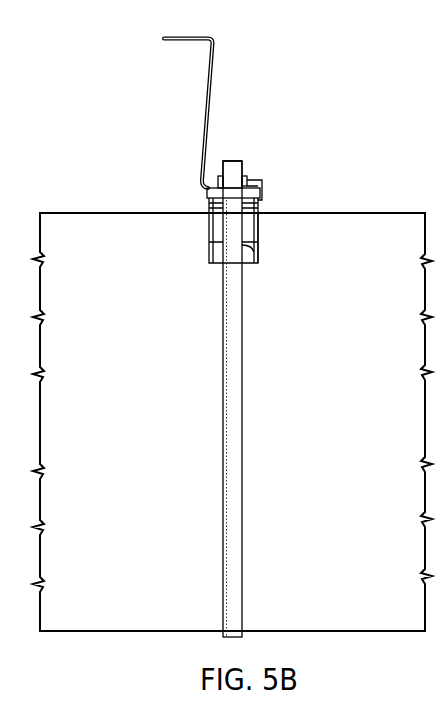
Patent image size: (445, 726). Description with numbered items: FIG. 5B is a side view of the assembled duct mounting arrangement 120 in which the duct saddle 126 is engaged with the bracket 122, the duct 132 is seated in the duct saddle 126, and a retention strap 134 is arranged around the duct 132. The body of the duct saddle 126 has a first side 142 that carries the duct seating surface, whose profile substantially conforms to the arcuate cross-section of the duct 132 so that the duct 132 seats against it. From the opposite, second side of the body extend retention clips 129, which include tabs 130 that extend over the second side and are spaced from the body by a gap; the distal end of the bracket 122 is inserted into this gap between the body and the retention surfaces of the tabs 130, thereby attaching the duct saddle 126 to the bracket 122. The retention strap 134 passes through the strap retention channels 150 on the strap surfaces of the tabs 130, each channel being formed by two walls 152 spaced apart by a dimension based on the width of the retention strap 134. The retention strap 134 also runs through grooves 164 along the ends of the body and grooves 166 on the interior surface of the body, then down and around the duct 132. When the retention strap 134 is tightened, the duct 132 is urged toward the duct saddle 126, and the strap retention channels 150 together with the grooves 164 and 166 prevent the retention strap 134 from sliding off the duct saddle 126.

The fastener assembly 120 is at (322, 118).
The bracket 122 is at (215, 80).
The duct saddle 126 is at (268, 243).
The retention clips 129 is at (237, 152).
The tabs 130 is at (262, 183).
The duct 132 is at (112, 618).
The retention strap 134 is at (232, 582).
The first side 142 is at (213, 267).
The strap retention channels 150 is at (248, 165).
The walls 152 is at (220, 176).
The grooves 164 is at (253, 248).
The grooves 166 is at (263, 203).